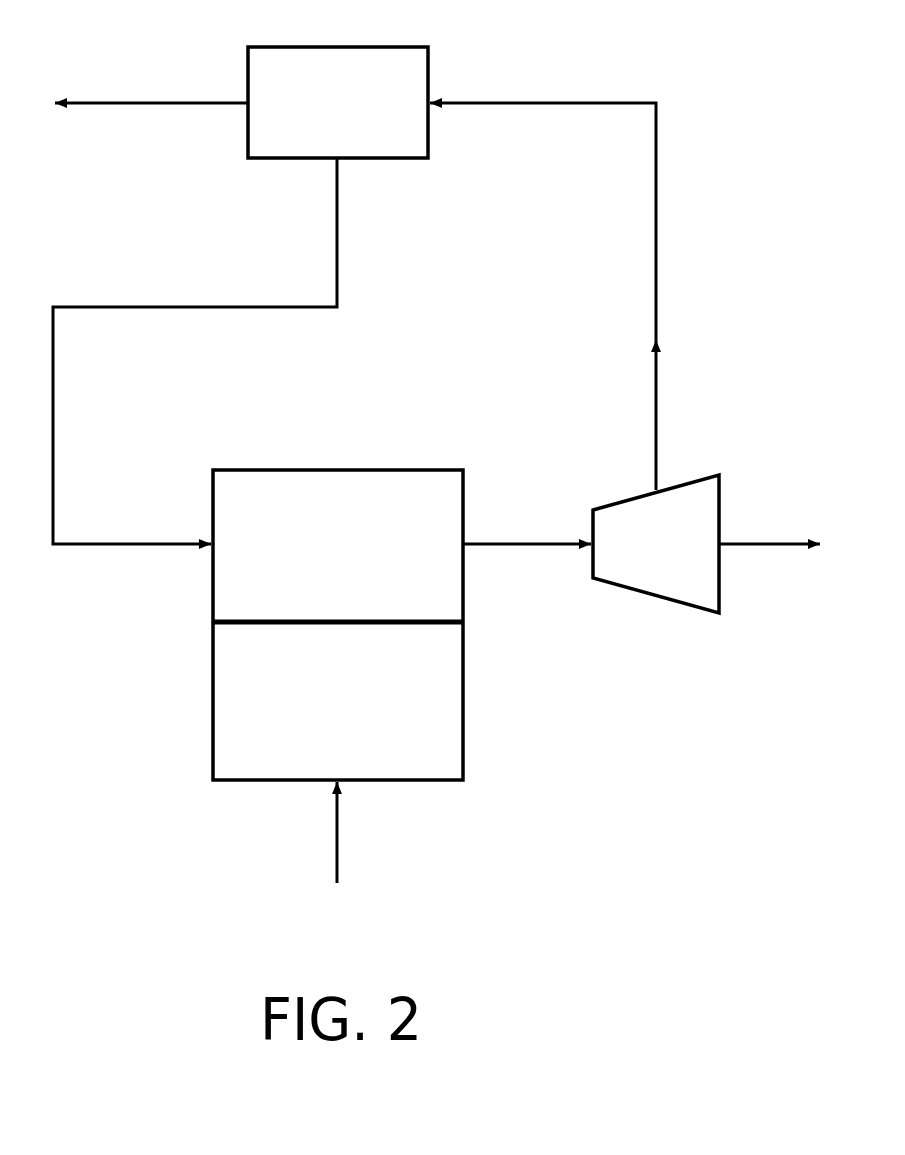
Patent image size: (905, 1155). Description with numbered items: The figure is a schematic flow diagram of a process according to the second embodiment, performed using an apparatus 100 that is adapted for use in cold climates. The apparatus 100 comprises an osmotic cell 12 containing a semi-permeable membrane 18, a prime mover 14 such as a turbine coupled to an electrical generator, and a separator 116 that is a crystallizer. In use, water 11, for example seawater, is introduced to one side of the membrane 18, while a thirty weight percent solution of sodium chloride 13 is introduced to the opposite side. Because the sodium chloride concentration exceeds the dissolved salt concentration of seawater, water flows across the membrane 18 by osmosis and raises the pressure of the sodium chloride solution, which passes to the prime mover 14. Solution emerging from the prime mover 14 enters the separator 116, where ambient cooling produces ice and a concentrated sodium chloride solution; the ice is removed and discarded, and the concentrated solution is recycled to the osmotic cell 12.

The separator 116 is at (429, 67).
The solution of sodium chloride 13 is at (53, 353).
The osmotic cell 12 is at (270, 470).
The semi-permeable membrane 18 is at (465, 620).
The water 11 is at (339, 843).
The prime mover 14 is at (665, 600).
The apparatus 100 is at (676, 861).